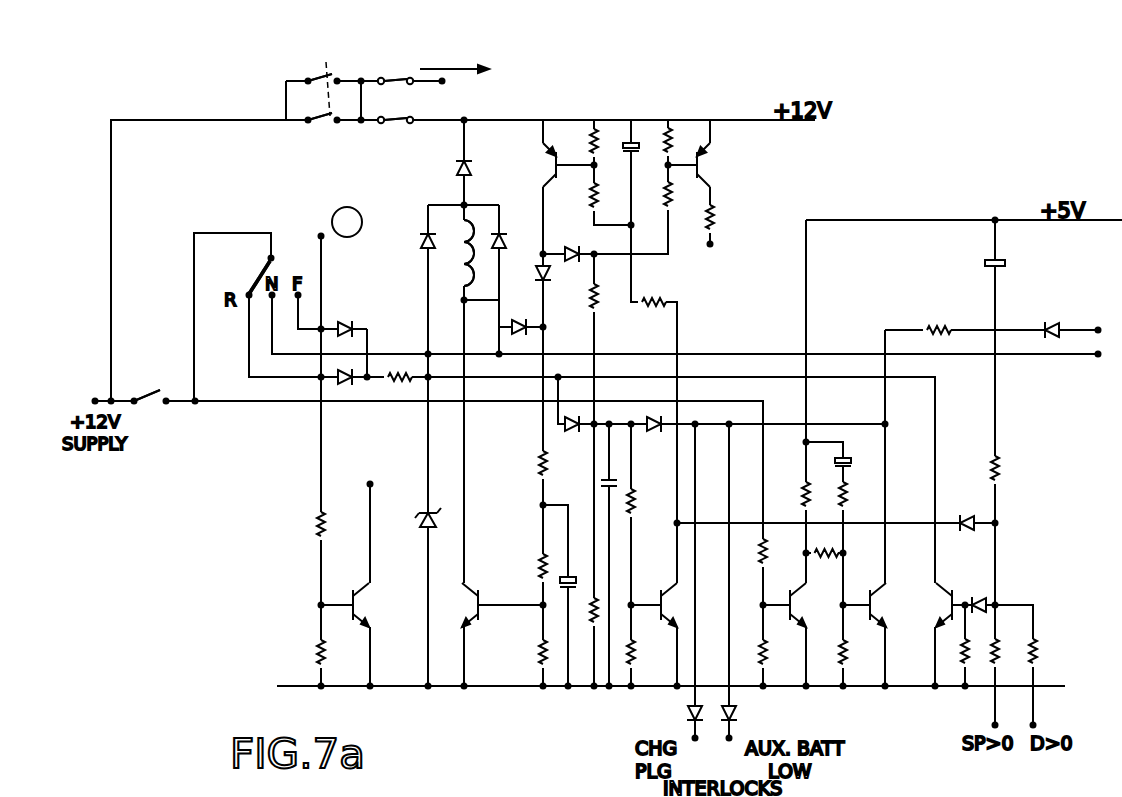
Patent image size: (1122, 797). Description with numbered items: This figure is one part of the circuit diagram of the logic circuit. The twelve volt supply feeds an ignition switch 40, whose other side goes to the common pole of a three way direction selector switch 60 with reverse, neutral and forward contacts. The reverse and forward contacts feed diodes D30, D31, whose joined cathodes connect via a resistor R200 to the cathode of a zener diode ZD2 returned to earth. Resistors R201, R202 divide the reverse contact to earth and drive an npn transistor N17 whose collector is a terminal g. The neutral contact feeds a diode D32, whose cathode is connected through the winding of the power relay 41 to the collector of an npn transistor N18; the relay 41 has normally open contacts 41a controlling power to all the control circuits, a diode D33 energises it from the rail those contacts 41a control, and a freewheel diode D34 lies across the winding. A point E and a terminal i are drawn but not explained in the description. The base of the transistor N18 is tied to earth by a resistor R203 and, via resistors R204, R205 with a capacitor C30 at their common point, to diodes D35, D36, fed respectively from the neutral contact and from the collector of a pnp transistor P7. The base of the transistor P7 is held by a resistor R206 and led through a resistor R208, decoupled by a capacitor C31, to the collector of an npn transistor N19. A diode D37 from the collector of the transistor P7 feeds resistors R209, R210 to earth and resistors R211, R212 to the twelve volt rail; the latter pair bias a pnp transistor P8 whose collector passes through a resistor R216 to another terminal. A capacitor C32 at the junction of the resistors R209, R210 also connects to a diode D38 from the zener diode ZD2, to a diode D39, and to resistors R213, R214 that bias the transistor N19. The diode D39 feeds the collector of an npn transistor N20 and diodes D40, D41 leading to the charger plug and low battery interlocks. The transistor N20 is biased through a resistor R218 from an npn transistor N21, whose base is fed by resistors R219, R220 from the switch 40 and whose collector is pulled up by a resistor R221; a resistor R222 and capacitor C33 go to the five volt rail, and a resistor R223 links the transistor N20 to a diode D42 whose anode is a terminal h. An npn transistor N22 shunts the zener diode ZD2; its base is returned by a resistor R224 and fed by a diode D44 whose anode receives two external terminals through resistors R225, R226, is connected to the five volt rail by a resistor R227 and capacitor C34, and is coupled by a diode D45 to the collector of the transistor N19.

The normally open contacts 41a is at (324, 72).
The three way direction selector switch 60 is at (262, 270).
The ignition switch 40 is at (160, 392).
The terminal E is at (347, 222).
The power relay 41 is at (453, 262).
The diode D30 is at (347, 318).
The diode D31 is at (342, 386).
The diode D32 is at (420, 242).
The diode D33 is at (457, 167).
The freewheel diode D34 is at (515, 236).
The diode D35 is at (510, 327).
The diode D36 is at (536, 278).
The diode D37 is at (572, 264).
The diode D38 is at (569, 433).
The diode D39 is at (660, 433).
The diode D40 is at (690, 713).
The diode D41 is at (740, 712).
The diode D42 is at (1051, 321).
The diode D44 is at (978, 592).
The diode D45 is at (962, 515).
The zener diode ZD2 is at (420, 520).
The resistor R200 is at (396, 370).
The resistor R201 is at (316, 522).
The resistor R202 is at (316, 654).
The resistor R203 is at (538, 655).
The resistor R204 is at (538, 572).
The resistor R205 is at (538, 468).
The resistor R206 is at (591, 136).
The resistor R208 is at (665, 302).
The resistor R209 is at (597, 312).
The resistor R210 is at (588, 592).
The resistor R211 is at (676, 130).
The resistor R212 is at (677, 196).
The resistor R213 is at (640, 510).
The resistor R214 is at (661, 656).
The resistor R216 is at (716, 222).
The resistor R218 is at (870, 662).
The resistor R219 is at (791, 544).
The resistor R220 is at (792, 657).
The resistor R221 is at (800, 496).
The resistor R222 is at (848, 500).
The resistor R223 is at (927, 313).
The resistor R224 is at (960, 652).
The resistor R225 is at (1004, 650).
The resistor R226 is at (1040, 652).
The resistor R227 is at (1002, 471).
The capacitor C30 is at (565, 590).
The capacitor C31 is at (630, 153).
The capacitor C32 is at (612, 478).
The capacitor C33 is at (850, 462).
The capacitor C34 is at (1008, 262).
The pnp transistor P7 is at (548, 167).
The pnp transistor P8 is at (697, 165).
The npn transistor N17 is at (356, 604).
The npn transistor N18 is at (470, 606).
The npn transistor N19 is at (658, 600).
The npn transistor N20 is at (875, 605).
The npn transistor N21 is at (795, 605).
The npn transistor N22 is at (948, 598).
The terminal g is at (380, 532).
The terminal h is at (1090, 333).
The terminal i is at (1057, 359).